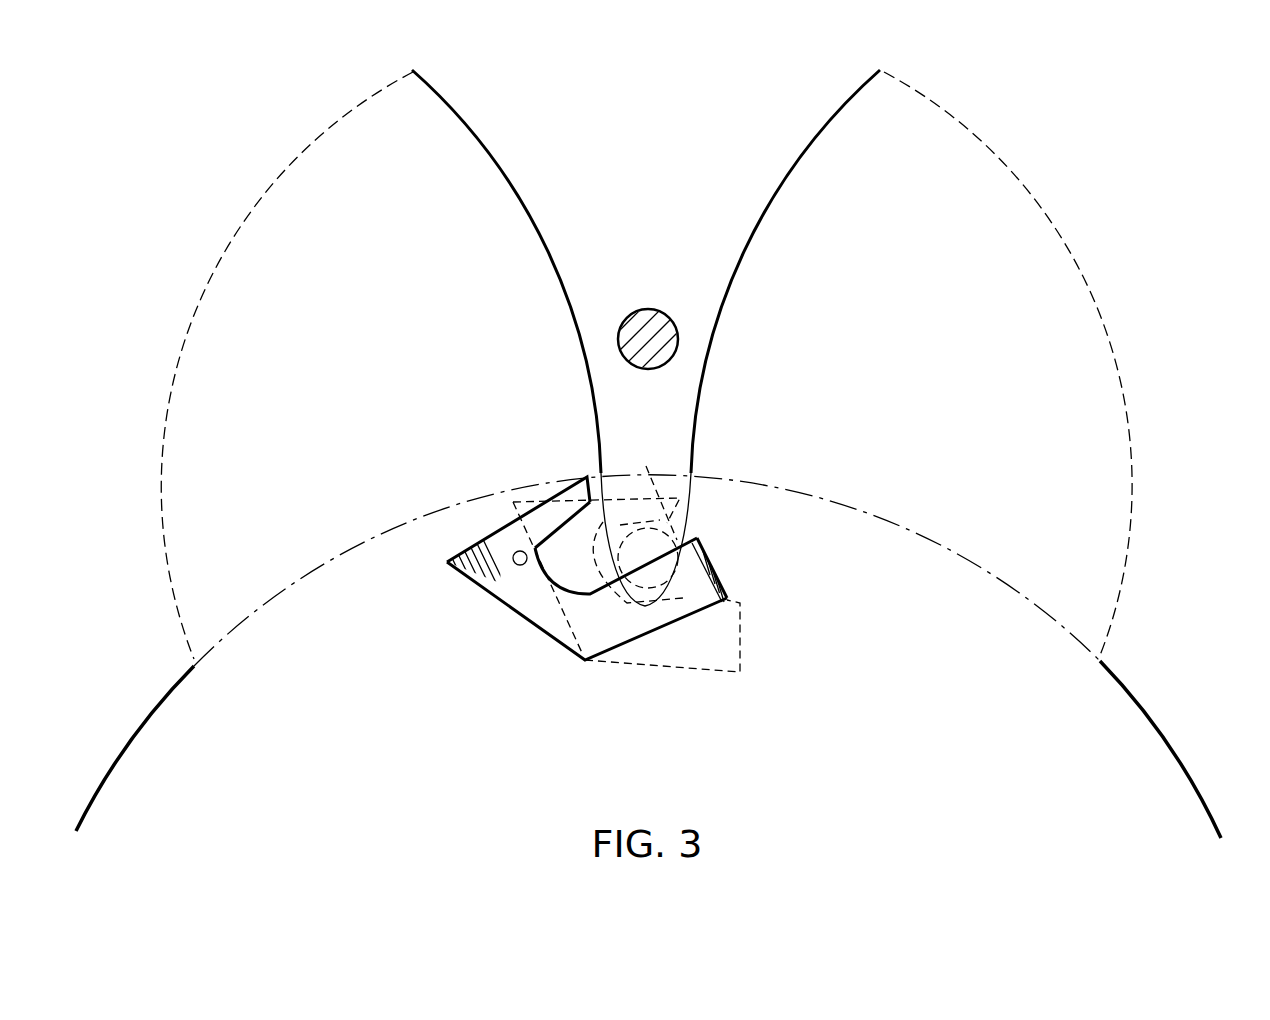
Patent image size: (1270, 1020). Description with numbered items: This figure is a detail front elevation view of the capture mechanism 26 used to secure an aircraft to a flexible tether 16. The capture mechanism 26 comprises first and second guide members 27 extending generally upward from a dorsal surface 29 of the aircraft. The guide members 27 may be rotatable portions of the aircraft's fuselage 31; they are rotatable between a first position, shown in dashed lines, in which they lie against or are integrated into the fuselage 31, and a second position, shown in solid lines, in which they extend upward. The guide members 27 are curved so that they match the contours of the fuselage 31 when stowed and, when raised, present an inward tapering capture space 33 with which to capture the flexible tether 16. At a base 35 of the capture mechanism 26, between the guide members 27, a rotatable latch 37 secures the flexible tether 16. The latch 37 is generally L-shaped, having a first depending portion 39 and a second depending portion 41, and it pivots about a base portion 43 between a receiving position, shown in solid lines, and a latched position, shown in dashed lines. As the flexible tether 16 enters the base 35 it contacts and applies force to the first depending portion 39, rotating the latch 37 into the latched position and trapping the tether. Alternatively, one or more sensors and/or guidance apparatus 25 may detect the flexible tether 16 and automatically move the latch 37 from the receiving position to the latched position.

The flexible tether 16 is at (652, 308).
The sensors and/or guidance apparatus 25 is at (514, 550).
The capture mechanism 26 is at (1042, 90).
The guide members 27 is at (484, 145).
The dorsal surface 29 is at (881, 517).
The fuselage 31 is at (1141, 707).
The capture space 33 is at (632, 153).
The base 35 is at (693, 500).
The latch 37 is at (512, 610).
The first depending portion 39 is at (717, 560).
The second depending portion 41 is at (560, 478).
The base portion 43 is at (585, 663).